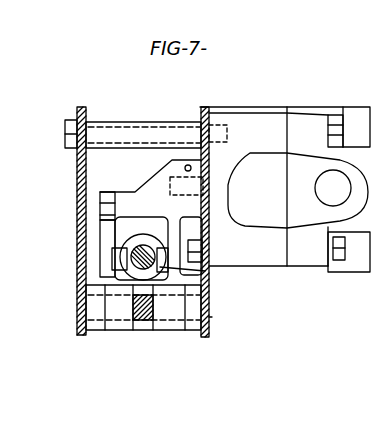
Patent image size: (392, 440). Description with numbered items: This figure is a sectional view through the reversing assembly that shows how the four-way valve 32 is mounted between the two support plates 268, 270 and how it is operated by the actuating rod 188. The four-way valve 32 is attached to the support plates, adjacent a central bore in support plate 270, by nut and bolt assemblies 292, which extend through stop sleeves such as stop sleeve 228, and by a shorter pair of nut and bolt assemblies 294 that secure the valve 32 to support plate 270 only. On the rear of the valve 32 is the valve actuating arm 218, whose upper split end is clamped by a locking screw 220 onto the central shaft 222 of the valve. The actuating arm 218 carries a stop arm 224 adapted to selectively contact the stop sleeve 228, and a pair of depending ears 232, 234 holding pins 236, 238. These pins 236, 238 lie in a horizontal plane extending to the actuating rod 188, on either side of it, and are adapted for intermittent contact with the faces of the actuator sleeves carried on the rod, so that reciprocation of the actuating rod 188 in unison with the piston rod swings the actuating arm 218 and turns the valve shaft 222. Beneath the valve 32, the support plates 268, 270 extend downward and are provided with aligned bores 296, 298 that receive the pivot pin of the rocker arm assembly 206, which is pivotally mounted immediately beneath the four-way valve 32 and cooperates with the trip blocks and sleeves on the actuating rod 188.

The support plate 268 is at (80, 107).
The nut and bolt assemblies 292 is at (65, 129).
The stop sleeve 228 is at (107, 132).
The support plate 270 is at (204, 107).
The locking screw 220 is at (203, 165).
The four-way valve 32 is at (263, 117).
The nut and bolt assemblies 294 is at (340, 260).
The central shaft 222 is at (203, 195).
The valve actuating arm 218 is at (153, 180).
The stop arm 224 is at (108, 201).
The depending ear 232 is at (107, 238).
The pin 236 is at (118, 258).
The actuating rod 188 is at (88, 286).
The bore 296 is at (82, 313).
The rocker arm assembly 206 is at (125, 308).
The depending ear 234 is at (178, 228).
The pin 238 is at (205, 271).
The bore 298 is at (207, 317).